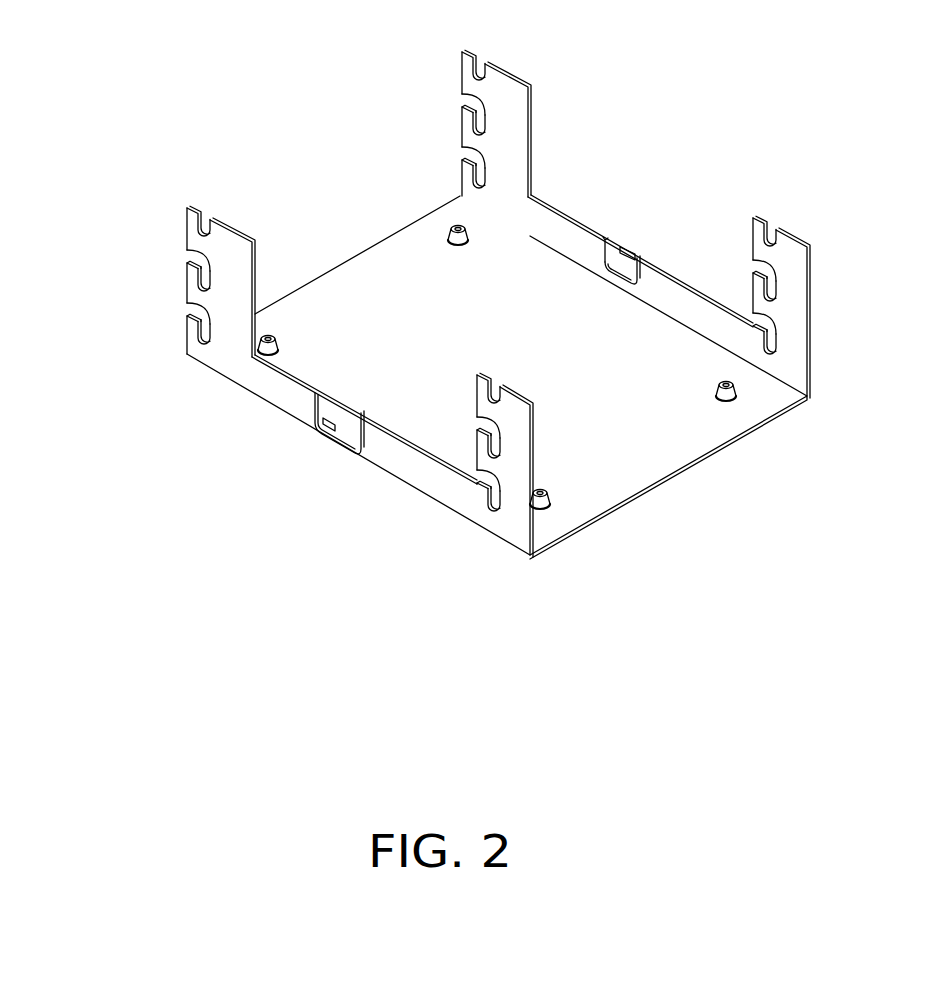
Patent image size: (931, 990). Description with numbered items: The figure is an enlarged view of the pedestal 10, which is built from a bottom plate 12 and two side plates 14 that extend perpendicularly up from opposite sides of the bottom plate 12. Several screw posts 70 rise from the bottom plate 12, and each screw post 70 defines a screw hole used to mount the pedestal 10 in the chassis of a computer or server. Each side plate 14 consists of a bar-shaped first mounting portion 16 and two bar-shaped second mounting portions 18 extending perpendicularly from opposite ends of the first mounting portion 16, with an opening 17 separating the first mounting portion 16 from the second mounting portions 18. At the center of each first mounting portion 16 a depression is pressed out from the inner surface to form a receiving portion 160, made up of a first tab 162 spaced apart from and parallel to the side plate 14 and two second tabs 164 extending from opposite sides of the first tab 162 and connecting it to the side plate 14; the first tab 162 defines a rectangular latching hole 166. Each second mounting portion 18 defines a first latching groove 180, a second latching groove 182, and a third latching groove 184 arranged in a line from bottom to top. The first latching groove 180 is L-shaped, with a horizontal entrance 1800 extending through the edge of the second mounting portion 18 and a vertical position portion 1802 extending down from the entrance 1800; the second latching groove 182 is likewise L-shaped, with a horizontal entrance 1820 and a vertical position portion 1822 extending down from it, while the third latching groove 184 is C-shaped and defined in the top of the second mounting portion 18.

The pedestal 10 is at (426, 327).
The bottom plate 12 is at (657, 443).
The side plate 14 is at (288, 382).
The first mounting portion 16 is at (415, 466).
The opening 17 is at (636, 268).
The second mounting portion 18 is at (515, 467).
The screw post 70 is at (545, 503).
The receiving portion 160 is at (643, 208).
The first tab 162 is at (630, 245).
The second tab 164 is at (613, 243).
The latching hole 166 is at (623, 216).
The first latching groove 180 is at (140, 355).
The entrance 1800 is at (188, 317).
The position portion 1802 is at (198, 337).
The second latching groove 182 is at (126, 273).
The entrance 1820 is at (188, 265).
The position portion 1822 is at (203, 287).
The third latching groove 184 is at (205, 228).